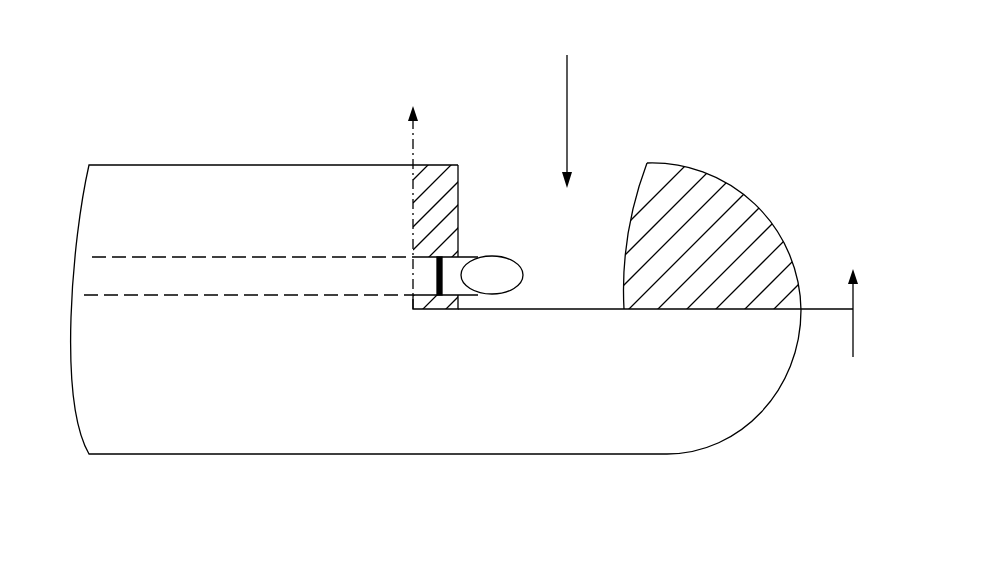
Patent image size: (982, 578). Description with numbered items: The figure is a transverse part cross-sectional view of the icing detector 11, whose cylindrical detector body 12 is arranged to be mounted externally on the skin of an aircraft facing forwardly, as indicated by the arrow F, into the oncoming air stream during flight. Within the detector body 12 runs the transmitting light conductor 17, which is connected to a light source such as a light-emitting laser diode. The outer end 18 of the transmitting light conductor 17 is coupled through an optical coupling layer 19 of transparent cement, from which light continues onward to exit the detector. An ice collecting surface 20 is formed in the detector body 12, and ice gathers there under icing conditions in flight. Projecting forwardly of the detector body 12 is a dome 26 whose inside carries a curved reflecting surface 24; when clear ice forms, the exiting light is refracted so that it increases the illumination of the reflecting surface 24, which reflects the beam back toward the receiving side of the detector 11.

The icing detector 11 is at (703, 119).
The detector body 12 is at (287, 165).
The transmitting light conductor 17 is at (206, 286).
The outer end of the transmitting light conductor 18 is at (463, 257).
The optical coupling layer 19 is at (437, 272).
The ice collecting surface 20 is at (546, 309).
The reflecting surface 24 is at (630, 224).
The dome 26 is at (767, 212).